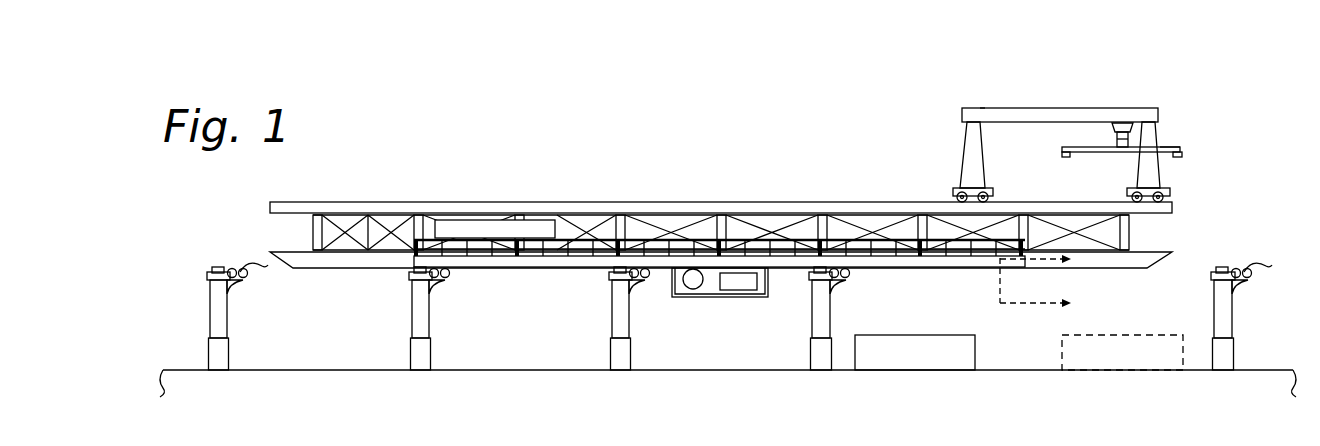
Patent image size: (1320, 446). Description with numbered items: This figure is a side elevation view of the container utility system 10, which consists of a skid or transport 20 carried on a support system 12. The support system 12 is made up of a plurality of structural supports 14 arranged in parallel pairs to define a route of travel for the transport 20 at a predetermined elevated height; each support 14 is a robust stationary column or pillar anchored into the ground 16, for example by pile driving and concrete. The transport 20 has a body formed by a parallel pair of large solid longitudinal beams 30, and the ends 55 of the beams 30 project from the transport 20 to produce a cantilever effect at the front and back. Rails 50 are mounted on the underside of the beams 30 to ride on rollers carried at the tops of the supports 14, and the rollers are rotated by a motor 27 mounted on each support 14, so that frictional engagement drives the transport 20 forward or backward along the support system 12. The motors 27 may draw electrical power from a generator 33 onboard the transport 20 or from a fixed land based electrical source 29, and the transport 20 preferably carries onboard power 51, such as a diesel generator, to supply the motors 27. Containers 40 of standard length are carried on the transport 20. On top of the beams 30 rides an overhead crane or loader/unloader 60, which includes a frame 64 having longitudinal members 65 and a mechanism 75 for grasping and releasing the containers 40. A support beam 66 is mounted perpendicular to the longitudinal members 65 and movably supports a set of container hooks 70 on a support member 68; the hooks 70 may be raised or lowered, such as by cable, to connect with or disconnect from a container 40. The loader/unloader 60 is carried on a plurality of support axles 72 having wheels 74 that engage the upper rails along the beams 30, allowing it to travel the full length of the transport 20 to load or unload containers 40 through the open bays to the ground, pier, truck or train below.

The container utility system 10 is at (418, 100).
The support system 12 is at (1226, 250).
The structural support 14 is at (210, 318).
The ground 16 is at (1268, 370).
The transport 20 is at (765, 200).
The motor 27 is at (233, 284).
The fixed land based electrical source 29 is at (240, 268).
The longitudinal beam 30 is at (379, 270).
The generator 33 is at (739, 290).
The container 40 is at (452, 219).
The rail 50 is at (1087, 269).
The onboard power 51 is at (692, 290).
The beam end 55 is at (276, 251).
The loader/unloader 60 is at (1027, 131).
The frame 64 is at (986, 108).
The longitudinal member 65 is at (1040, 108).
The support beam 66 is at (1112, 135).
The support member 68 is at (1062, 150).
The container hook 70 is at (1064, 157).
The support axle 72 is at (968, 152).
The wheel 74 is at (957, 195).
The grasping and releasing mechanism 75 is at (1169, 146).